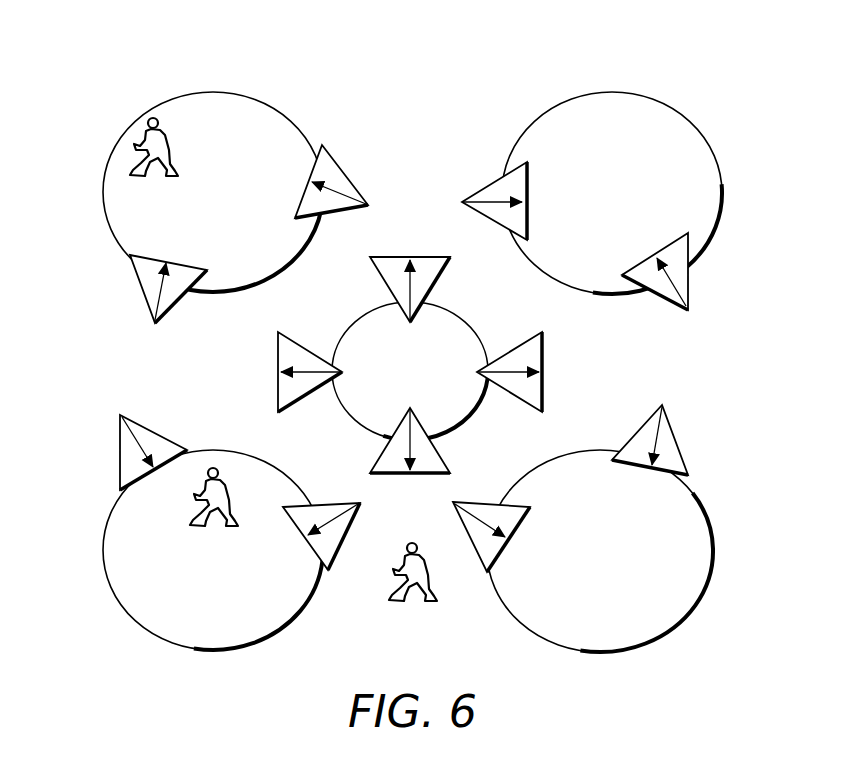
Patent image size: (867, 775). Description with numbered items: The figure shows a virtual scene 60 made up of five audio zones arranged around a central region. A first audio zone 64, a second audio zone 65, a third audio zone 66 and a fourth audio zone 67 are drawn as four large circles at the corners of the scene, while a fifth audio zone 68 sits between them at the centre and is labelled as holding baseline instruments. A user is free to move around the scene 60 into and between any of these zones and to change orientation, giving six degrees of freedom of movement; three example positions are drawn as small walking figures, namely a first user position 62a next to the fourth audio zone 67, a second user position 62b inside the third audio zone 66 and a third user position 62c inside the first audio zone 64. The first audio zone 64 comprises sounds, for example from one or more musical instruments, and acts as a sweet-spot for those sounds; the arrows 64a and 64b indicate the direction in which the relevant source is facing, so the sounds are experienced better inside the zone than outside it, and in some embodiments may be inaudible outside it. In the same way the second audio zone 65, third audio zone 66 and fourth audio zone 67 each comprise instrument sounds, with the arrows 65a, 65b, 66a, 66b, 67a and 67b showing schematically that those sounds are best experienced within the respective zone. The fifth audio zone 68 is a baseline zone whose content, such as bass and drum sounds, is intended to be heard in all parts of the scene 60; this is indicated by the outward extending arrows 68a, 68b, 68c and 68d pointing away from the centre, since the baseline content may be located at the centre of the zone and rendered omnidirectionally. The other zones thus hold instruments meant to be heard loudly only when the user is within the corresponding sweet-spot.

The virtual scene 60 is at (713, 80).
The first user position 62a is at (423, 603).
The second user position 62b is at (213, 467).
The third user position 62c is at (155, 117).
The first audio zone 64 is at (102, 193).
The arrow 64a is at (140, 290).
The arrow 64b is at (342, 167).
The second audio zone 65 is at (725, 193).
The arrow 65a is at (492, 183).
The arrow 65b is at (690, 287).
The third audio zone 66 is at (103, 552).
The arrow 66a is at (120, 443).
The arrow 66b is at (338, 500).
The fourth audio zone 67 is at (713, 553).
The arrow 67a is at (460, 512).
The arrow 67b is at (673, 435).
The fifth audio zone 68 is at (463, 317).
The outward extending arrow 68a is at (278, 352).
The outward extending arrow 68b is at (375, 270).
The outward extending arrow 68c is at (543, 348).
The outward extending arrow 68d is at (445, 462).